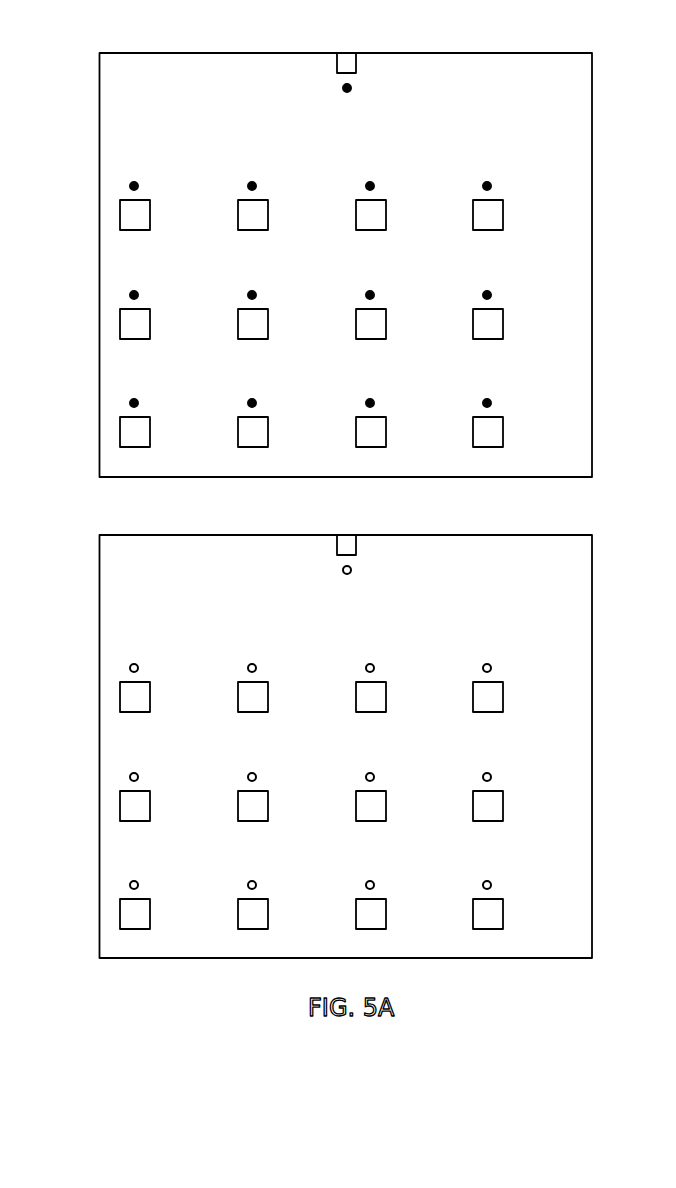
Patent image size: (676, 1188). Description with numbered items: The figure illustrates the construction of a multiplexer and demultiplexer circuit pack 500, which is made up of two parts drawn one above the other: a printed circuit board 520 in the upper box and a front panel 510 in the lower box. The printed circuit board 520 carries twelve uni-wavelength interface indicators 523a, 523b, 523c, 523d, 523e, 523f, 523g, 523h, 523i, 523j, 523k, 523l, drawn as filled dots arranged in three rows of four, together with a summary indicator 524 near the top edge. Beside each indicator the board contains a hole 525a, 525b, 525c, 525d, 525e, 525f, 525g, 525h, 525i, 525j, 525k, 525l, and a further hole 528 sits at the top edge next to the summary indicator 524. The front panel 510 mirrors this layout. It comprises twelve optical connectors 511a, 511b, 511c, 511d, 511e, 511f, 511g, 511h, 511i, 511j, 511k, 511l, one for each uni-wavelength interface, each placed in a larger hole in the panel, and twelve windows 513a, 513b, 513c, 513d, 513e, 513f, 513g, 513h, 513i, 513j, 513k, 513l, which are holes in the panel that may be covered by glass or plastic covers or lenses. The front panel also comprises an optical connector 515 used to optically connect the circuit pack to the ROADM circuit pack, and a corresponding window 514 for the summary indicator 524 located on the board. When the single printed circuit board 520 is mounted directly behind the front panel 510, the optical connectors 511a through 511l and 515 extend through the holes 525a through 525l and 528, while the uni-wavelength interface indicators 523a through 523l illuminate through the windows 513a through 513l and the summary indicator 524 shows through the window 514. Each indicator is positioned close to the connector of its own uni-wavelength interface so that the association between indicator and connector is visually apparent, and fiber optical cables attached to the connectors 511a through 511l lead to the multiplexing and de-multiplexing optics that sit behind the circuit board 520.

The multiplexer and demultiplexer circuit pack 500 is at (62, 35).
The printed circuit board 520 is at (160, 93).
The front panel 510 is at (155, 574).
The hole 528 is at (356, 62).
The summary indicator 524 is at (344, 94).
The optical connector 515 is at (356, 544).
The window 514 is at (344, 576).
The uni-wavelength interface indicator 523a is at (175, 169).
The uni-wavelength interface indicator 523b is at (293, 169).
The uni-wavelength interface indicator 523c is at (411, 169).
The uni-wavelength interface indicator 523d is at (528, 169).
The uni-wavelength interface indicator 523e is at (175, 278).
The uni-wavelength interface indicator 523f is at (294, 278).
The uni-wavelength interface indicator 523g is at (411, 278).
The uni-wavelength interface indicator 523h is at (528, 278).
The uni-wavelength interface indicator 523i is at (175, 386).
The uni-wavelength interface indicator 523j is at (293, 386).
The uni-wavelength interface indicator 523k is at (411, 386).
The uni-wavelength interface indicator 523l is at (528, 386).
The hole 525a is at (174, 208).
The hole 525b is at (292, 208).
The hole 525c is at (410, 208).
The hole 525d is at (527, 208).
The hole 525e is at (174, 317).
The hole 525f is at (292, 317).
The hole 525g is at (410, 317).
The hole 525h is at (527, 317).
The hole 525i is at (174, 425).
The hole 525j is at (292, 425).
The hole 525k is at (410, 425).
The hole 525l is at (527, 425).
The window 513a is at (175, 651).
The window 513b is at (293, 651).
The window 513c is at (411, 651).
The window 513d is at (528, 651).
The window 513e is at (175, 760).
The window 513f is at (293, 760).
The window 513g is at (411, 760).
The window 513h is at (528, 760).
The window 513i is at (175, 868).
The window 513j is at (293, 868).
The window 513k is at (411, 868).
The window 513l is at (528, 868).
The optical connector 511a is at (174, 690).
The optical connector 511b is at (292, 690).
The optical connector 511c is at (410, 690).
The optical connector 511d is at (527, 690).
The optical connector 511e is at (174, 799).
The optical connector 511f is at (292, 799).
The optical connector 511g is at (410, 799).
The optical connector 511h is at (527, 799).
The optical connector 511i is at (174, 907).
The optical connector 511j is at (292, 907).
The optical connector 511k is at (410, 907).
The optical connector 511l is at (527, 907).